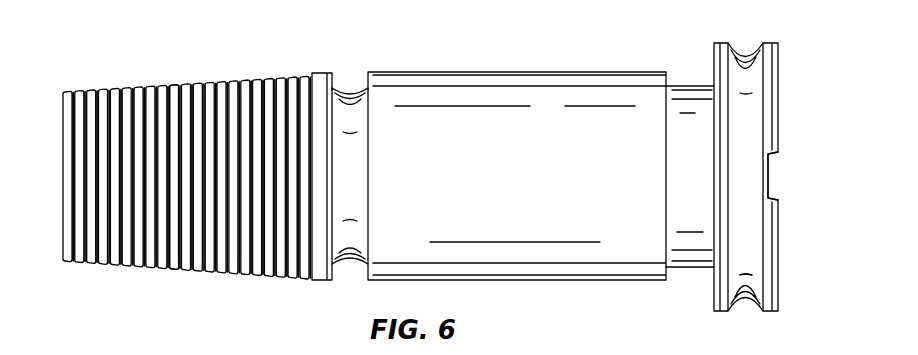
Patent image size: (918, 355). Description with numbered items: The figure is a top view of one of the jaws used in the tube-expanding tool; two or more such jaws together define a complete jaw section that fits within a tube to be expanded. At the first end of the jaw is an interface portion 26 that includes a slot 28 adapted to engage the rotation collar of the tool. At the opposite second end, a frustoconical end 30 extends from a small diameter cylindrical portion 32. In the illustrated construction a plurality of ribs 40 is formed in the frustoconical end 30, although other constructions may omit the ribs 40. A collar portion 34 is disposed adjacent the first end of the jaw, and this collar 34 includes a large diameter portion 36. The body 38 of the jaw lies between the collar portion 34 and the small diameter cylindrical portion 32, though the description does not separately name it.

The interface portion 26 is at (778, 97).
The slot 28 is at (768, 178).
The frustoconical end 30 is at (63, 103).
The small diameter cylindrical portion 32 is at (78, 232).
The collar portion 34 is at (752, 255).
The large diameter portion 36 is at (688, 100).
The body 38 is at (486, 95).
The ribs 40 is at (181, 108).